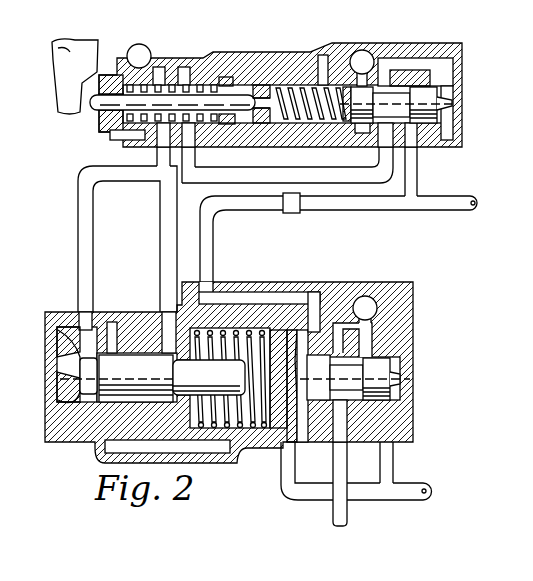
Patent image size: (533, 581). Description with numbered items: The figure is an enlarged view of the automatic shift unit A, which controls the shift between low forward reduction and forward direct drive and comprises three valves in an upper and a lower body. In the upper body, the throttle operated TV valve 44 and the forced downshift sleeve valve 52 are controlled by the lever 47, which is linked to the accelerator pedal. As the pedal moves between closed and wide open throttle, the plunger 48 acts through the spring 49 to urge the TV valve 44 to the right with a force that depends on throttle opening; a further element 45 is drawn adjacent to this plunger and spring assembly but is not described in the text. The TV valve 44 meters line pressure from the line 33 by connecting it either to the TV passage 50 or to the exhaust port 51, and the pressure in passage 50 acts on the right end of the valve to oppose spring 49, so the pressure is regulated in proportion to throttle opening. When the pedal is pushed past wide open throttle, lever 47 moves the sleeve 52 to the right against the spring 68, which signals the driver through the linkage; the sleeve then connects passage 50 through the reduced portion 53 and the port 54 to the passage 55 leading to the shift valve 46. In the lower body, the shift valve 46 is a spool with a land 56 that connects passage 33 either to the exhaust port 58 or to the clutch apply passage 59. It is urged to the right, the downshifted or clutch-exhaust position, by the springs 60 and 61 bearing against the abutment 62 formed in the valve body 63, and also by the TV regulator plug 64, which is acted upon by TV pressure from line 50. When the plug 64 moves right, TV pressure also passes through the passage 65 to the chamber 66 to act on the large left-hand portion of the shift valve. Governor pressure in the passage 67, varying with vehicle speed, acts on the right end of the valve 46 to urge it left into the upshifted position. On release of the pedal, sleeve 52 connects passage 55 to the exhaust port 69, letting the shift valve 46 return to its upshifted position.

The automatic shift unit A is at (424, 42).
The lever 47 is at (60, 45).
The forced downshift valve 52 is at (110, 76).
The exhaust port 69 is at (150, 50).
The spring 68 is at (178, 84).
The plunger 48 is at (244, 96).
The spring 45 is at (262, 90).
The spring 49 is at (322, 68).
The exhaust port 51 is at (362, 50).
The TV valve 44 is at (440, 103).
The reduced portion 53 is at (116, 139).
The port 54 is at (163, 147).
The TV passage 50 is at (258, 173).
The line 33 is at (420, 205).
The passage 55 is at (168, 298).
The valve body 63 is at (400, 302).
The passage 65 is at (116, 458).
The TV regulator plug 64 is at (86, 381).
The abutment 62 is at (166, 398).
The chamber 66 is at (239, 334).
The spring 61 is at (206, 396).
The spring 60 is at (243, 438).
The land 56 is at (310, 434).
The governor pressure passage 67 is at (298, 330).
The exhaust port 58 is at (364, 296).
The shift valve 46 is at (356, 446).
The clutch apply passage 59 is at (340, 508).